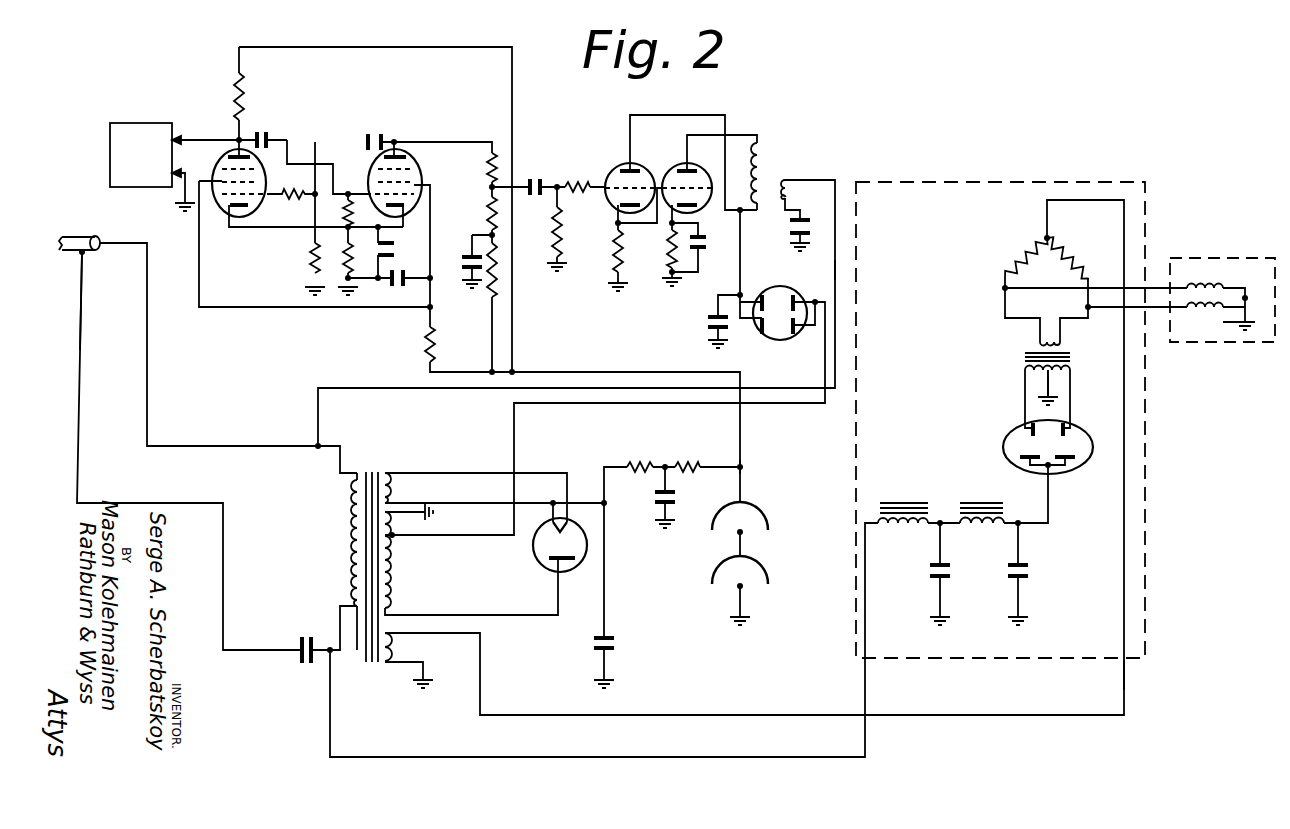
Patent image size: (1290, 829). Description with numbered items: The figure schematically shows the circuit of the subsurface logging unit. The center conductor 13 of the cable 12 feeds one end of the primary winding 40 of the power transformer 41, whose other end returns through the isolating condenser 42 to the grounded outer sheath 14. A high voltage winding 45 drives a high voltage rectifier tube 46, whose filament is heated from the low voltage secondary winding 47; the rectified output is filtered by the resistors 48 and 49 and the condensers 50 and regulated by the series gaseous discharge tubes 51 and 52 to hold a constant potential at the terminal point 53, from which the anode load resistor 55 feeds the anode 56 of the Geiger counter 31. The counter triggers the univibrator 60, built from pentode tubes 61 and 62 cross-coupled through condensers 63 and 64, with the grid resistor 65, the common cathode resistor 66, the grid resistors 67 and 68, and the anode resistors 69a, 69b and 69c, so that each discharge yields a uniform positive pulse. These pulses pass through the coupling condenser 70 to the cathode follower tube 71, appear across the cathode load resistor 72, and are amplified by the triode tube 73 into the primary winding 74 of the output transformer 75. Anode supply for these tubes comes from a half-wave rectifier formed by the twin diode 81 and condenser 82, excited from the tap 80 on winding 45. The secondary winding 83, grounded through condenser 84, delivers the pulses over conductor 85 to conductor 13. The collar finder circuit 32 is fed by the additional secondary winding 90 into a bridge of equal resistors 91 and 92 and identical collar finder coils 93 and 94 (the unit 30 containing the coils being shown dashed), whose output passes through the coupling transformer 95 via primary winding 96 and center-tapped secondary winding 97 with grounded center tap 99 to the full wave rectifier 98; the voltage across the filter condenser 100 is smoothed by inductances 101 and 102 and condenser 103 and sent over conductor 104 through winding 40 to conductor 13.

The cable 12 is at (78, 256).
The center conductor 13 is at (118, 243).
The outer sheath 14 is at (70, 238).
The relay unit 30 is at (1213, 258).
The Geiger counter 31 is at (162, 122).
The collar finder circuit 32 is at (1058, 182).
The primary winding 40 is at (352, 542).
The power transformer 41 is at (384, 462).
The isolating condenser 42 is at (306, 637).
The high voltage winding 45 is at (394, 586).
The high voltage rectifier tube 46 is at (536, 561).
The low voltage secondary winding 47 is at (393, 486).
The resistor 48 is at (640, 462).
The resistor 49 is at (690, 462).
The condensers 50 is at (676, 498).
The gaseous discharge regulator tube 51 is at (762, 512).
The gaseous discharge regulator tube 52 is at (764, 566).
The terminal point 53 is at (745, 466).
The anode load resistor 55 is at (246, 100).
The anode 56 is at (180, 138).
The modified multivibrator circuit 60 is at (332, 130).
The pentode tube 61 is at (212, 156).
The pentode tube 62 is at (420, 166).
The condenser 63 is at (263, 132).
The condenser 64 is at (378, 133).
The resistor 65 is at (345, 217).
The common cathode resistor 66 is at (338, 258).
The resistor 67 is at (297, 182).
The resistor 68 is at (310, 259).
The resistor 69a is at (488, 283).
The resistor 69b is at (488, 214).
The resistor 69c is at (488, 172).
The coupling condenser 70 is at (537, 179).
The cathode follower tube 71 is at (614, 170).
The cathode load resistor 72 is at (612, 253).
The triode amplifier tube 73 is at (700, 170).
The primary winding 74 is at (765, 155).
The output transformer 75 is at (780, 237).
The tap 80 is at (396, 537).
The twin diode 81 is at (776, 340).
The condenser 82 is at (710, 323).
The low impedance secondary winding 83 is at (792, 192).
The condenser 84 is at (796, 236).
The conductor 85 is at (834, 272).
The additional secondary winding 90 is at (394, 645).
The resistor 91 is at (1022, 262).
The resistor 92 is at (1068, 262).
The collar finder coil 93 is at (1208, 288).
The collar finder coil 94 is at (1212, 310).
The coupling transformer 95 is at (1007, 361).
The primary winding 96 is at (1038, 335).
The secondary winding 97 is at (1072, 373).
The full wave rectifier 98 is at (1003, 447).
The center tap 99 is at (1046, 372).
The filter condenser 100 is at (1022, 562).
The inductance 101 is at (908, 528).
The inductance 102 is at (995, 528).
The condenser 103 is at (936, 580).
The conductor 104 is at (755, 760).